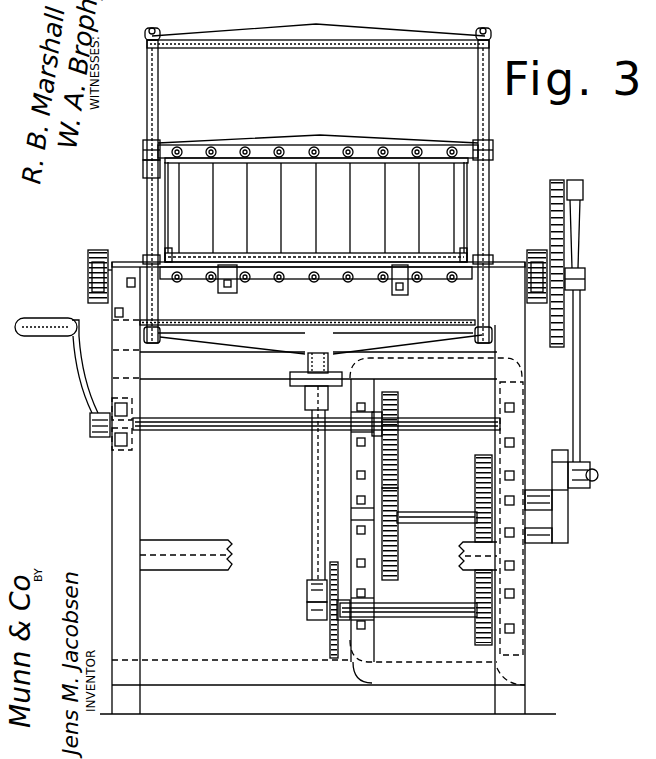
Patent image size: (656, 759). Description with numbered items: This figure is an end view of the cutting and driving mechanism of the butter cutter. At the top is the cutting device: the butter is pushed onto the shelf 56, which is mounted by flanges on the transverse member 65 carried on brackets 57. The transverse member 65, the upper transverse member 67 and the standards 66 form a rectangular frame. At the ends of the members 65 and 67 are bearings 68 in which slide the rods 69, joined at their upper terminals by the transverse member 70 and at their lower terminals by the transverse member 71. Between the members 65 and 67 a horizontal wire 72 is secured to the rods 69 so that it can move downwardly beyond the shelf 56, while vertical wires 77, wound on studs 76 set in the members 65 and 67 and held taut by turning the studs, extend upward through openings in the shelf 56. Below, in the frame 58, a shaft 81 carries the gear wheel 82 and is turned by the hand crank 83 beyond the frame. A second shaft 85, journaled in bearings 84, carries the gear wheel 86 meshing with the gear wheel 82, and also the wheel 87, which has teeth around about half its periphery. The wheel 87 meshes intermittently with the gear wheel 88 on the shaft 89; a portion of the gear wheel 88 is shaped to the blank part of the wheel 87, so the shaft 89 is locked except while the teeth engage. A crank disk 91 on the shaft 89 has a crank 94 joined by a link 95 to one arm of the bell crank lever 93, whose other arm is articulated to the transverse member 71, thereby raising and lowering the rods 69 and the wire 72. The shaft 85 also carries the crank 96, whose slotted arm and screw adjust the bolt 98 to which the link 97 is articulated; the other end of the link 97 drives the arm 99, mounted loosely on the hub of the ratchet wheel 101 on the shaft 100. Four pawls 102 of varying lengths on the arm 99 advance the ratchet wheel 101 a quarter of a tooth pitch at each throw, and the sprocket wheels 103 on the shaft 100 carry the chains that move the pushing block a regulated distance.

The shelf 56 is at (286, 262).
The brackets 57 is at (400, 295).
The frame 58 is at (536, 366).
The transverse member 65 is at (315, 283).
The standards 66 is at (163, 212).
The transverse member 67 is at (330, 143).
The bearings 68 is at (143, 155).
The rods 69 is at (158, 114).
The transverse member 70 is at (316, 26).
The transverse member 71 is at (316, 337).
The wire 72 is at (318, 170).
The studs 76 is at (281, 145).
The vertical wires 77 is at (352, 234).
The shaft 81 is at (257, 432).
The gear wheel 82 is at (398, 412).
The crank 83 is at (85, 380).
The bearings 84 is at (548, 490).
The shaft 85 is at (430, 512).
The gear wheel 86 is at (398, 570).
The wheel 87 is at (476, 494).
The gear wheel 88 is at (476, 628).
The shaft 89 is at (406, 617).
The crank disk 91 is at (330, 640).
The bell crank lever 93 is at (312, 493).
The crank 94 is at (306, 618).
The link 95 is at (307, 600).
The crank 96 is at (566, 498).
The link 97 is at (585, 413).
The bolt 98 is at (590, 466).
The arm 99 is at (580, 240).
The shaft 100 is at (586, 278).
The ratchet wheel 101 is at (580, 326).
The pawls 102 is at (557, 180).
The sprocket wheels 103 is at (88, 272).